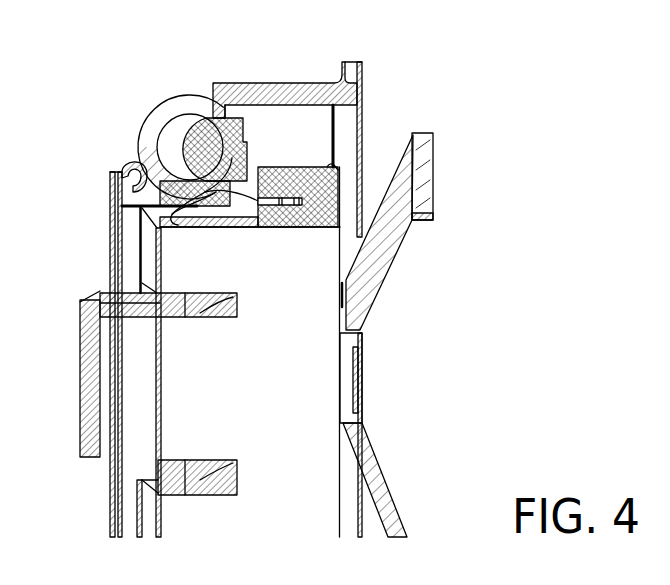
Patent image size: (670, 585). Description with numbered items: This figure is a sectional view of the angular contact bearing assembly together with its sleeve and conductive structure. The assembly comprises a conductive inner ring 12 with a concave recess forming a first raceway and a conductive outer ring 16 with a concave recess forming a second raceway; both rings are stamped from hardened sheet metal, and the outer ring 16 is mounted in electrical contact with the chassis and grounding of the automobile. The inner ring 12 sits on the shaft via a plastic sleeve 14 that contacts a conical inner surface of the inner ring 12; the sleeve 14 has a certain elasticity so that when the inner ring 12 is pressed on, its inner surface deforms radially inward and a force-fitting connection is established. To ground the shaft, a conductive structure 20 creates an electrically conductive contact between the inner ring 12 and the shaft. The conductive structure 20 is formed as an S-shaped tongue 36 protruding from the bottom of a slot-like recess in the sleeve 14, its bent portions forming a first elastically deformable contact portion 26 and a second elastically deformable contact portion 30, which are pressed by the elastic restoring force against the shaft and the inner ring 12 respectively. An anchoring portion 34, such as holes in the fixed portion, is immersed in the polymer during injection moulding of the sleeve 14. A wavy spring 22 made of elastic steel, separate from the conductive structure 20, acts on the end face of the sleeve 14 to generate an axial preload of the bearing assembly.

The inner ring 12 is at (213, 117).
The sleeve 14 is at (303, 335).
The outer ring 16 is at (167, 105).
The conductive structure 20 is at (337, 172).
The wavy spring 22 is at (400, 244).
The first elastically deformable contact portion 26 is at (133, 165).
The second elastically deformable contact portion 30 is at (180, 228).
The anchoring portion 34 is at (340, 222).
The tongue 36 is at (110, 203).